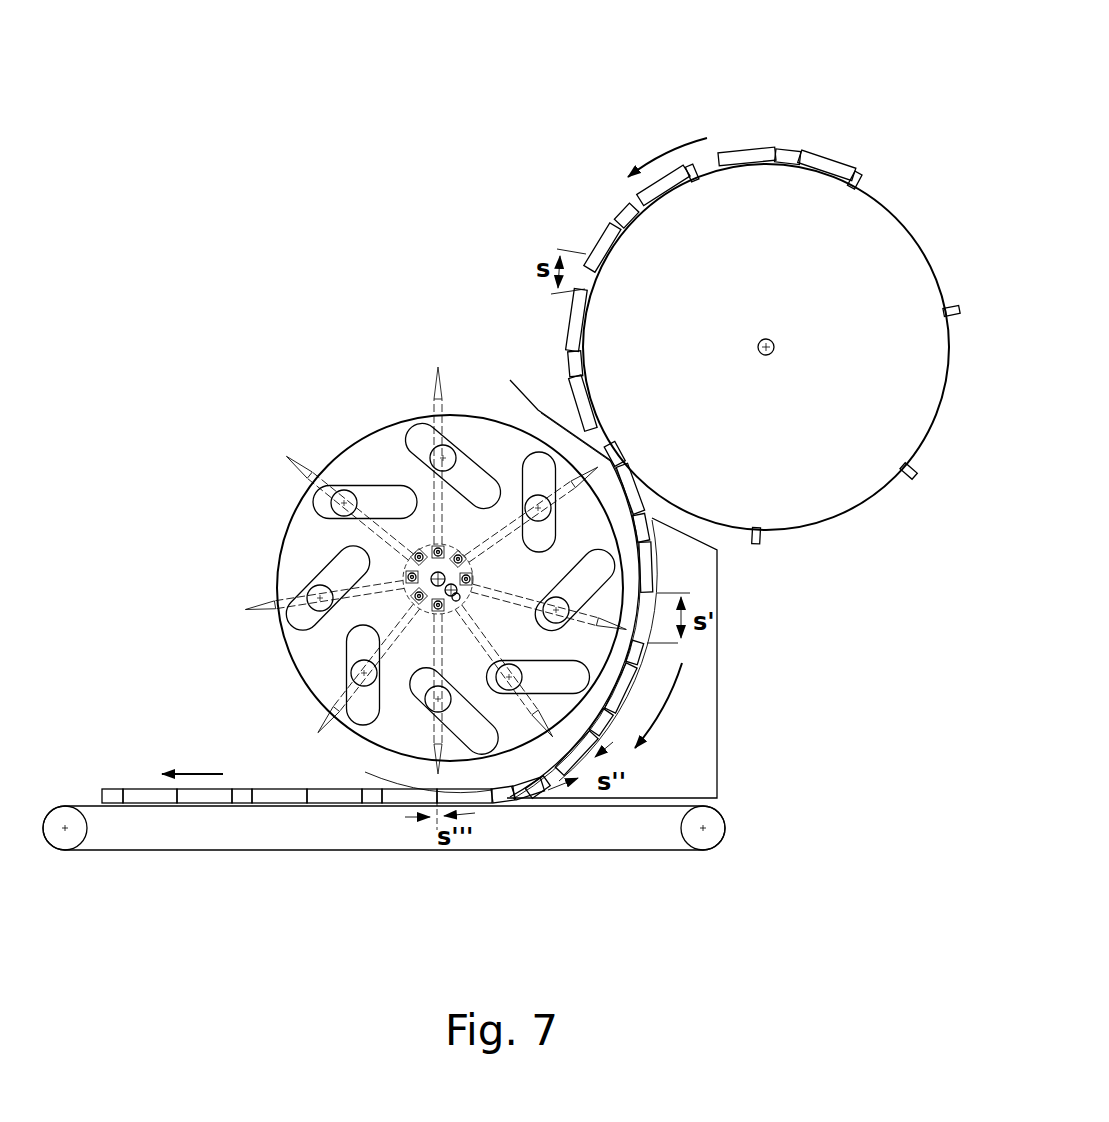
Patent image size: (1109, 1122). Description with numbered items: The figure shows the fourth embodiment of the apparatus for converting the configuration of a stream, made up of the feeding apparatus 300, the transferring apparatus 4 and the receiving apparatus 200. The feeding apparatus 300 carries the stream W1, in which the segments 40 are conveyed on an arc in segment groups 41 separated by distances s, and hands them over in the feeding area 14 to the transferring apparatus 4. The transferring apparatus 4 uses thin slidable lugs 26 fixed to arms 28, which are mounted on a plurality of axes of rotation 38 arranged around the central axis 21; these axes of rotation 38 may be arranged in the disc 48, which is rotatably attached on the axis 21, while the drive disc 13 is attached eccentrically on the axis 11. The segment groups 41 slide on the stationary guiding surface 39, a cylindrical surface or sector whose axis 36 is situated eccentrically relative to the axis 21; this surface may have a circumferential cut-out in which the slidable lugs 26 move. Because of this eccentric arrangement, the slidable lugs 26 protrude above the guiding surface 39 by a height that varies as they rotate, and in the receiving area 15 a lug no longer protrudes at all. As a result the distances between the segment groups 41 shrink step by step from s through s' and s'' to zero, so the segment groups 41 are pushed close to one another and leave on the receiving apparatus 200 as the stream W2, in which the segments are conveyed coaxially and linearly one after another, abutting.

The feeding apparatus 300 is at (603, 105).
The segment groups 41 is at (790, 135).
The stream W1 is at (592, 192).
The feeding area 14 is at (562, 400).
The guiding surface 39 is at (540, 410).
The transferring apparatus 4 is at (363, 516).
The drive disc 13 is at (317, 683).
The slidable lugs 26 is at (442, 372).
The arms 28 is at (436, 549).
The disc 48 is at (416, 554).
The axes of rotation 38 is at (409, 576).
The axis 21 is at (431, 578).
The axis 36 is at (416, 596).
The axis 11 is at (449, 593).
The receiving area 15 is at (505, 812).
The receiving apparatus 200 is at (260, 862).
The segments 40 is at (145, 808).
The stream W2 is at (147, 773).